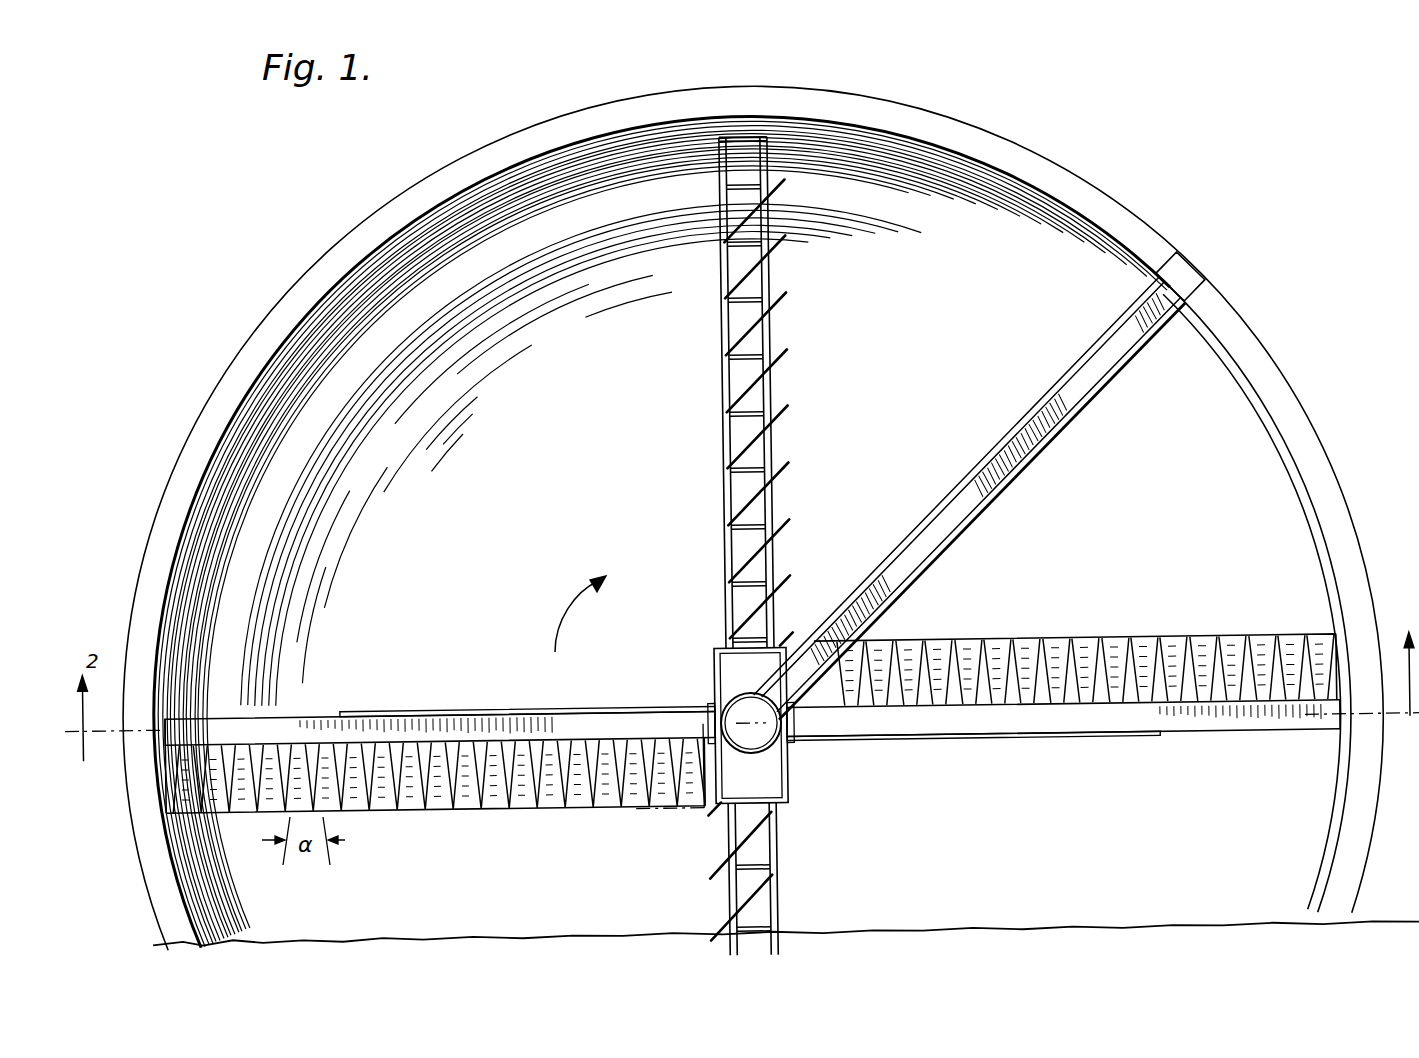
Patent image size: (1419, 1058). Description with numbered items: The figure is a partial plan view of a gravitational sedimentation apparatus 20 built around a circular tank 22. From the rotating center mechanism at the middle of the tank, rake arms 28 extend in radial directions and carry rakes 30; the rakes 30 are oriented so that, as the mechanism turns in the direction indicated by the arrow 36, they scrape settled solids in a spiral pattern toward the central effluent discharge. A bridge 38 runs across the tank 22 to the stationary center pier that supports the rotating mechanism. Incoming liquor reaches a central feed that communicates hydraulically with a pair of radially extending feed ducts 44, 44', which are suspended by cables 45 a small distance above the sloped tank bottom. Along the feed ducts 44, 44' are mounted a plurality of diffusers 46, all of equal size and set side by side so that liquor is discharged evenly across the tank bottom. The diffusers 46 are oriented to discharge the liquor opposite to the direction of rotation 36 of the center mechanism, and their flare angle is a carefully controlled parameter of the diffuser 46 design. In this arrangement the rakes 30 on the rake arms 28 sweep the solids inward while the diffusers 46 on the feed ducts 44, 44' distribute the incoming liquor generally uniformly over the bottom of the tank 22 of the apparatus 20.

The sedimentation apparatus 20 is at (273, 269).
The circular tank 22 is at (240, 378).
The rake arms 28 is at (710, 520).
The rakes 30 is at (790, 359).
The arrow indicating direction of rotation 36 is at (596, 619).
The bridge 38 is at (972, 469).
The feed duct 44 is at (440, 686).
The feed duct 44' is at (1063, 741).
The cables 45 is at (405, 706).
The diffusers 46 is at (1062, 642).